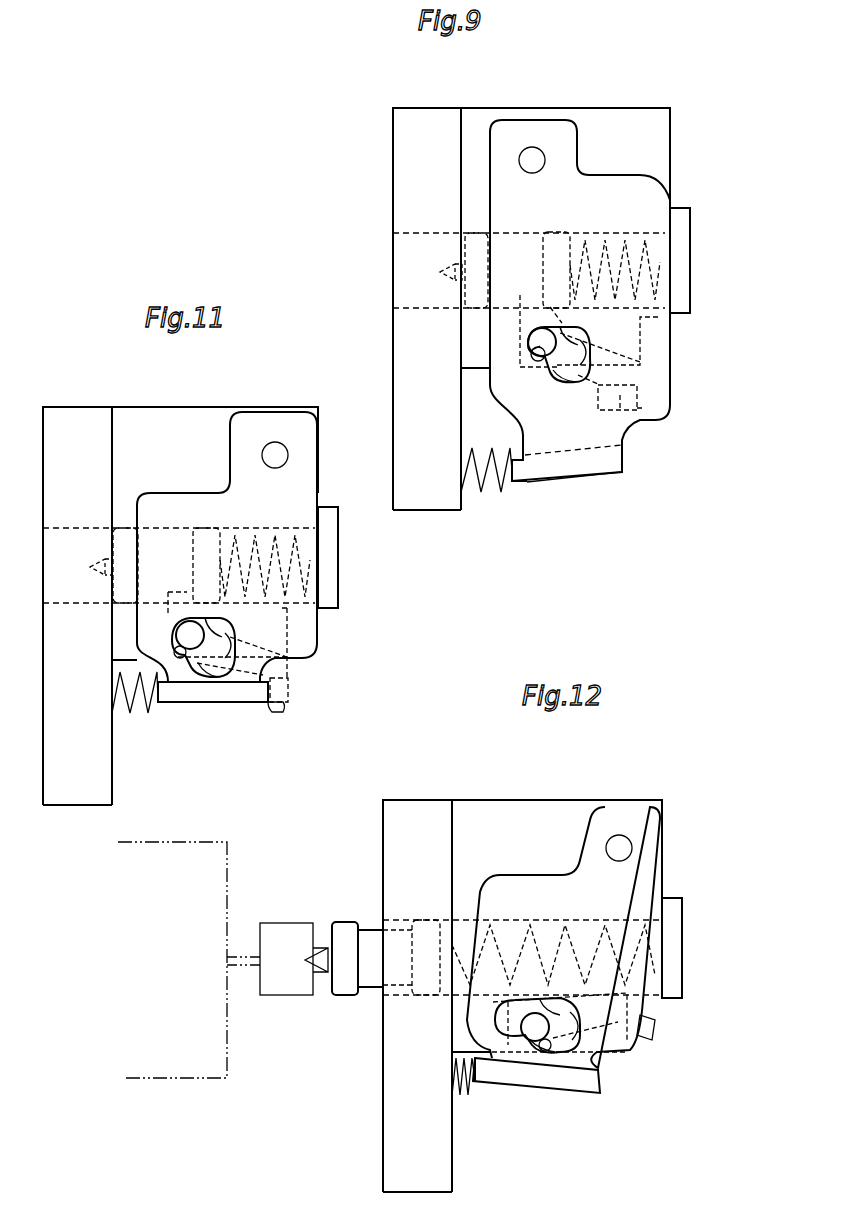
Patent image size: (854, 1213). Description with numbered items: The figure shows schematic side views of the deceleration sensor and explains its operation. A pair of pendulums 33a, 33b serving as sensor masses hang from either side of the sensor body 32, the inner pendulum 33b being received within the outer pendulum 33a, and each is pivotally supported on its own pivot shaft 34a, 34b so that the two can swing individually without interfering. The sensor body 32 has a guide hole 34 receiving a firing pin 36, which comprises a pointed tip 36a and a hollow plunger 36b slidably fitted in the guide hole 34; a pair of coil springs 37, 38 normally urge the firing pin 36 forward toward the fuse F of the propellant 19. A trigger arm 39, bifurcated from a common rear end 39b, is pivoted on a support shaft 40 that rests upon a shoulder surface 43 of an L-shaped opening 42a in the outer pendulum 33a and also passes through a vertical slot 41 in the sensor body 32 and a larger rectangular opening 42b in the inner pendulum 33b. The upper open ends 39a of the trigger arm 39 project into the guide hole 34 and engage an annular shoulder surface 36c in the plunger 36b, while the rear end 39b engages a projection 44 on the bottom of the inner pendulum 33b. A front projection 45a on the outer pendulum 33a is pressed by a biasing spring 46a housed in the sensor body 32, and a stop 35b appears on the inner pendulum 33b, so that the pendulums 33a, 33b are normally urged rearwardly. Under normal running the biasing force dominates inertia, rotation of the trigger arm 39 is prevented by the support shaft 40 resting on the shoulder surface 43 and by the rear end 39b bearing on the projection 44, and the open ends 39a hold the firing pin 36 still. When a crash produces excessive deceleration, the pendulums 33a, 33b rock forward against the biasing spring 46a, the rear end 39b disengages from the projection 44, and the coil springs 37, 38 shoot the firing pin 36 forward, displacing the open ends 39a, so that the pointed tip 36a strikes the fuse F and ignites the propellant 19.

In FIG. 12, the propellant 19 is at (208, 1078).
In FIG. 9, the sensor body 32 is at (437, 108).
In FIG. 11, the sensor body 32 is at (82, 407).
In FIG. 12, the sensor body 32 is at (443, 800).
In FIG. 9, the outer pendulum 33a is at (653, 183).
In FIG. 11, the inner pendulum 33b is at (312, 492).
In FIG. 12, the inner pendulum 33b is at (655, 887).
In FIG. 9, the guide hole 34 is at (425, 236).
In FIG. 11, the guide hole 34 is at (75, 529).
In FIG. 9, the pivot shaft 34a is at (533, 147).
In FIG. 11, the pivot shaft 34b is at (290, 457).
In FIG. 12, the pivot shaft 34b is at (621, 835).
In FIG. 11, the stop portion 35b is at (163, 704).
In FIG. 12, the stop portion 35b is at (480, 1086).
In FIG. 9, the firing pin 36 is at (510, 243).
In FIG. 11, the firing pin 36 is at (160, 533).
In FIG. 12, the firing pin 36 is at (372, 925).
In FIG. 12, the pointed tip 36a is at (318, 948).
In FIG. 11, the plunger 36b is at (130, 714).
In FIG. 12, the plunger 36b is at (462, 1097).
In FIG. 9, the annular shoulder surface 36c is at (557, 234).
In FIG. 11, the annular shoulder surface 36c is at (207, 528).
In FIG. 9, the coil spring 37 is at (655, 270).
In FIG. 11, the coil spring 37 is at (320, 580).
In FIG. 12, the coil spring 37 is at (636, 960).
In FIG. 9, the coil spring 38 is at (668, 260).
In FIG. 11, the coil spring 38 is at (329, 557).
In FIG. 12, the coil spring 38 is at (600, 948).
In FIG. 9, the trigger arm 39 is at (577, 380).
In FIG. 11, the trigger arm 39 is at (218, 662).
In FIG. 12, the trigger arm 39 is at (610, 1054).
In FIG. 9, the upper open ends 39a is at (538, 306).
In FIG. 11, the upper open ends 39a is at (203, 617).
In FIG. 9, the rear end 39b is at (632, 422).
In FIG. 11, the rear end 39b is at (283, 713).
In FIG. 12, the rear end 39b is at (643, 1038).
In FIG. 9, the support shaft 40 is at (526, 338).
In FIG. 11, the support shaft 40 is at (175, 638).
In FIG. 12, the support shaft 40 is at (520, 1026).
In FIG. 9, the vertical slot 41 is at (537, 361).
In FIG. 11, the vertical slot 41 is at (183, 660).
In FIG. 12, the vertical slot 41 is at (549, 1052).
In FIG. 9, the L-shaped opening 42a is at (581, 344).
In FIG. 11, the L-shaped opening 42a is at (284, 668).
In FIG. 12, the L-shaped opening 42a is at (545, 1072).
In FIG. 11, the rectangular opening 42b is at (226, 642).
In FIG. 12, the rectangular opening 42b is at (509, 1050).
In FIG. 9, the shoulder surface 43 is at (531, 351).
In FIG. 9, the projection 44 is at (627, 432).
In FIG. 11, the projection 44 is at (286, 690).
In FIG. 12, the projection 44 is at (601, 1090).
In FIG. 9, the projection 45a is at (518, 484).
In FIG. 9, the biasing spring 46a is at (488, 494).
In FIG. 12, the fuse F is at (276, 997).